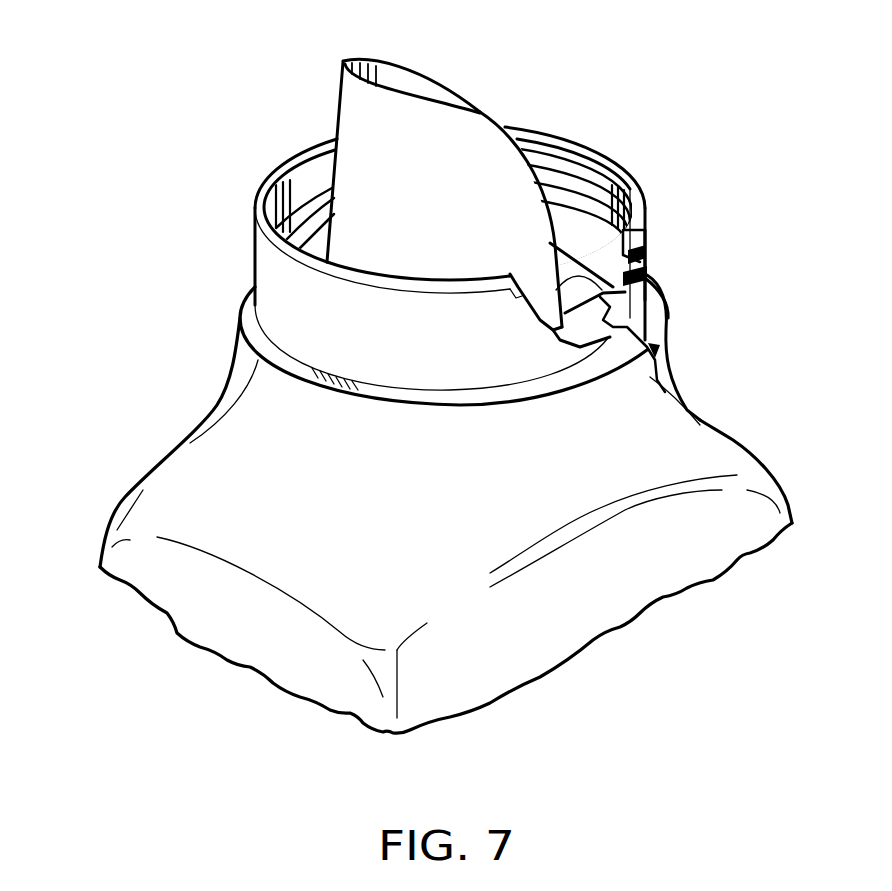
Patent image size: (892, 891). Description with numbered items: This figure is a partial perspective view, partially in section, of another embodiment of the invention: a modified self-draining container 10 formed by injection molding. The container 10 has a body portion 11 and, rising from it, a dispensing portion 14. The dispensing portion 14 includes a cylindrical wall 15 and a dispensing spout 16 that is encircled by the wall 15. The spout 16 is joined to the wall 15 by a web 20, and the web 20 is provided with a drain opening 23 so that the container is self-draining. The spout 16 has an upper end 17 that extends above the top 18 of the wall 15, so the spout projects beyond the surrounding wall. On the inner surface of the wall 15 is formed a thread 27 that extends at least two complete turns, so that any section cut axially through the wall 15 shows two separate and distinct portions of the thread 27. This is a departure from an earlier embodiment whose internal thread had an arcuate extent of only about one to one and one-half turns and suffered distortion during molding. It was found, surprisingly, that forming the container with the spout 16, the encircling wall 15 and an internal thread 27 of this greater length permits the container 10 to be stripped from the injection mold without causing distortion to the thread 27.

The self-draining container 10 is at (140, 443).
The body portion 11 is at (386, 550).
The dispensing portion 14 is at (665, 215).
The cylindrical wall 15 is at (253, 270).
The dispensing spout 16 is at (336, 132).
The upper end of the spout 17 is at (343, 61).
The top of the wall 18 is at (267, 202).
The web 20 is at (580, 313).
The drain opening 23 is at (582, 278).
The thread 27 is at (605, 235).